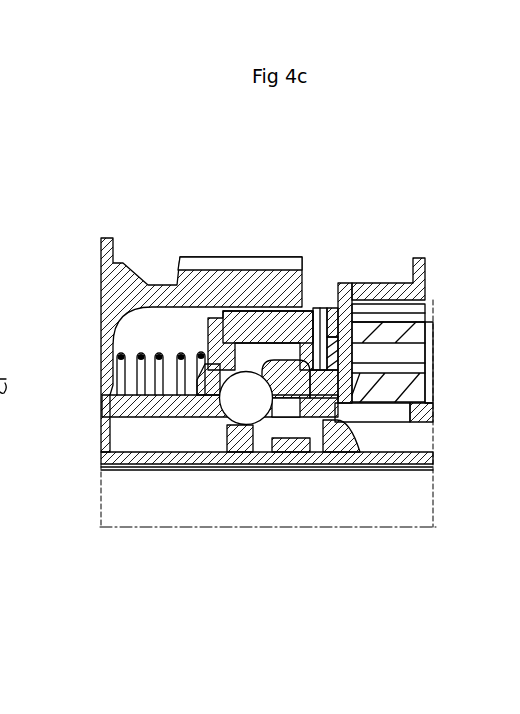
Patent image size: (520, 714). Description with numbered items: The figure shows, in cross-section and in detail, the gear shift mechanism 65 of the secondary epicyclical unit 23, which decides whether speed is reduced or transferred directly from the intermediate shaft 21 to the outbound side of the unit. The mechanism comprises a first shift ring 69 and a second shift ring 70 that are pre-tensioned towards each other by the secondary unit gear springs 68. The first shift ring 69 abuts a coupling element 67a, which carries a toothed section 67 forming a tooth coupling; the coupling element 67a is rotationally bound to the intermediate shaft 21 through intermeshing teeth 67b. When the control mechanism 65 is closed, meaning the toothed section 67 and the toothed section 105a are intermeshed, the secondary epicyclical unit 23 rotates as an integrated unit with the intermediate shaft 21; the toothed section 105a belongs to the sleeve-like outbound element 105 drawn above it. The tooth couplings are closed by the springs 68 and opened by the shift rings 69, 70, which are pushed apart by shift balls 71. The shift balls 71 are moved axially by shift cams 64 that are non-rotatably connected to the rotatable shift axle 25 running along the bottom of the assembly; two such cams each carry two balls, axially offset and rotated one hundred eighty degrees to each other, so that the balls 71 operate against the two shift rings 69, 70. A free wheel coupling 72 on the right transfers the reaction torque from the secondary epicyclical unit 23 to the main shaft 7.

The intermediate shaft 21 is at (125, 308).
The secondary epicyclical unit 23 is at (289, 196).
The rotatable shift axle 25 is at (400, 462).
The main shaft 7 is at (418, 412).
The shift cam 64 is at (244, 430).
The gear shift mechanism 65 is at (101, 607).
The toothed section 67 is at (323, 308).
The coupling element 67a is at (298, 307).
The intermeshing teeth 67b is at (250, 311).
The secondary unit gear springs 68 is at (163, 372).
The first shift ring 69 is at (203, 396).
The second shift ring 70 is at (309, 365).
The shift ball 71 is at (250, 400).
The free wheel coupling 72 is at (402, 315).
The sleeve 105 is at (425, 266).
The toothed section 105a is at (346, 283).